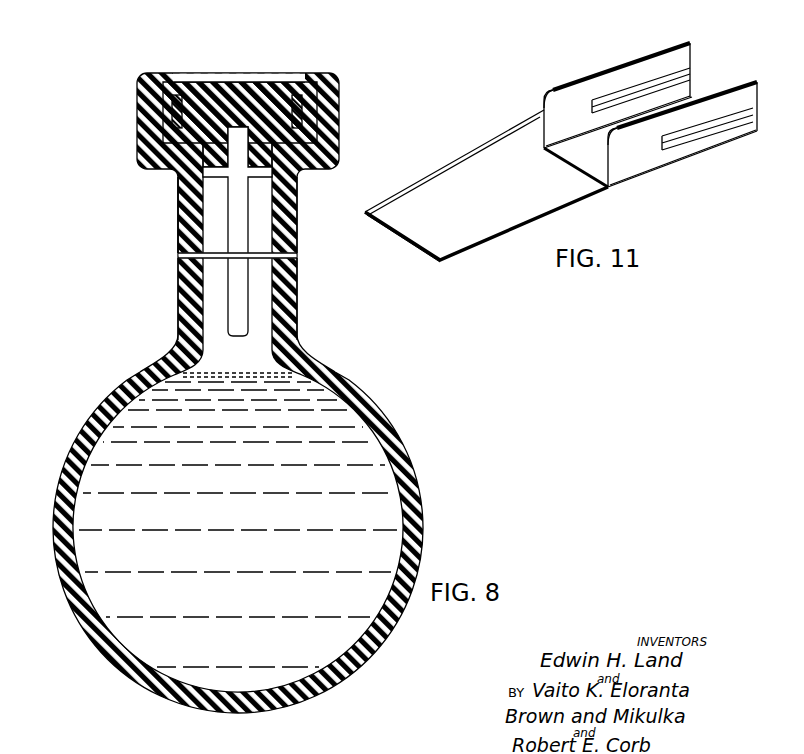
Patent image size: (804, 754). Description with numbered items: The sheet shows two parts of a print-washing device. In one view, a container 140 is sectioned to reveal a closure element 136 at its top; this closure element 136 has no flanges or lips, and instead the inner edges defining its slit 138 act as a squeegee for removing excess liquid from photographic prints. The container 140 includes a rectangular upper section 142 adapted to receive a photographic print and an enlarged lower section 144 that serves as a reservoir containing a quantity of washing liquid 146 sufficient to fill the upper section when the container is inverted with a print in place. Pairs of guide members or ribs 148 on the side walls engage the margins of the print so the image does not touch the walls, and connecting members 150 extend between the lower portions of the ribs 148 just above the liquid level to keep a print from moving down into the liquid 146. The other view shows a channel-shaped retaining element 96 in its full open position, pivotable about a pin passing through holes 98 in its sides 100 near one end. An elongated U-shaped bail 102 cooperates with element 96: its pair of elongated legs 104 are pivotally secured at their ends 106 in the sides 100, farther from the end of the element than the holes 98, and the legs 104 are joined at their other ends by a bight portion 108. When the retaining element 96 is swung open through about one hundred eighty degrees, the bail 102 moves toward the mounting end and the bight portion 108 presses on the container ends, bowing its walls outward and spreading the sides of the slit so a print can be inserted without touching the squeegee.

In FIG. 11, the channel-shaped retaining element 96 is at (638, 52).
In FIG. 11, the holes 98 is at (570, 113).
In FIG. 11, the sides 100 is at (560, 102).
In FIG. 11, the U-shaped bail 102 is at (426, 260).
In FIG. 11, the legs 104 is at (463, 155).
In FIG. 11, the ends 106 is at (593, 88).
In FIG. 11, the bight portion 108 is at (398, 230).
In FIG. 8, the closure element 136 is at (268, 70).
In FIG. 8, the slit 138 is at (246, 79).
In FIG. 8, the container 140 is at (170, 245).
In FIG. 8, the rectangular upper section 142 is at (180, 222).
In FIG. 8, the enlarged lower section 144 is at (97, 412).
In FIG. 8, the washing liquid 146 is at (254, 558).
In FIG. 8, the guide members or ribs 148 is at (213, 278).
In FIG. 8, the connecting members 150 is at (238, 346).